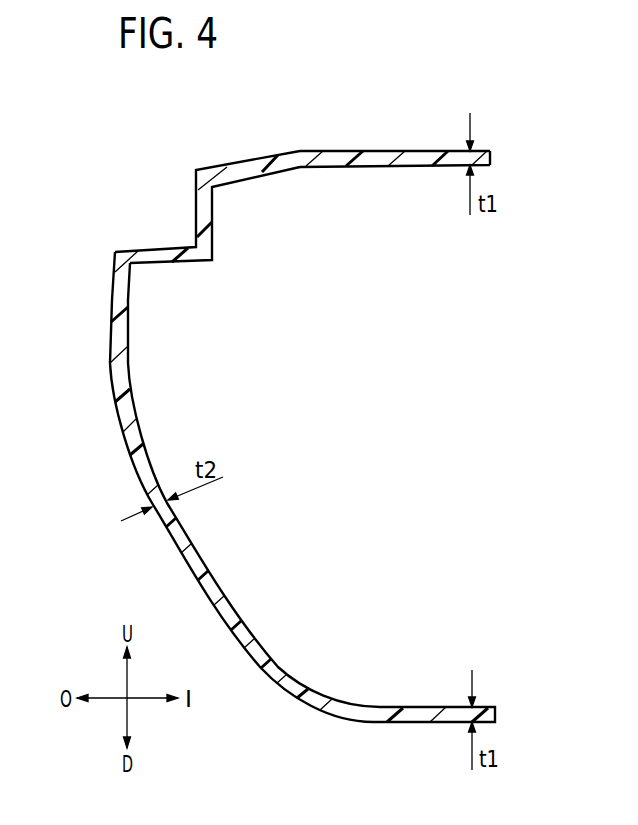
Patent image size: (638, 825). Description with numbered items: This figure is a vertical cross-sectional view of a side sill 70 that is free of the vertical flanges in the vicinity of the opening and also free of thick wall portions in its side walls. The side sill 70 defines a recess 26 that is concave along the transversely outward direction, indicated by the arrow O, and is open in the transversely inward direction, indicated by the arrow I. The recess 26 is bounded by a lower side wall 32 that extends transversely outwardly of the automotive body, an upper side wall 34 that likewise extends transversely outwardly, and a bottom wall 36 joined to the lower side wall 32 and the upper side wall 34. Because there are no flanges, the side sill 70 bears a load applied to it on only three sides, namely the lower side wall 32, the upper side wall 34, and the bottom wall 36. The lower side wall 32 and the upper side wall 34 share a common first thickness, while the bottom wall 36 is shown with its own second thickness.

The recess 26 is at (279, 435).
The lower side wall 32 is at (381, 722).
The upper side wall 34 is at (388, 150).
The bottom wall 36 is at (135, 447).
The side sill 70 is at (246, 151).